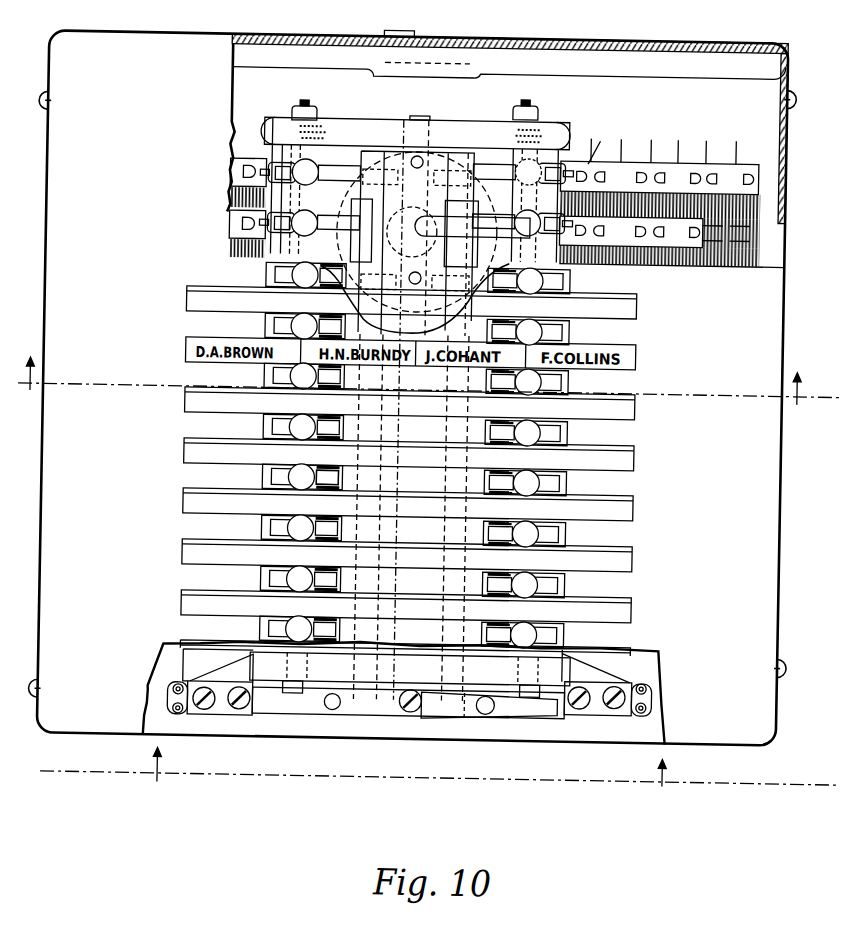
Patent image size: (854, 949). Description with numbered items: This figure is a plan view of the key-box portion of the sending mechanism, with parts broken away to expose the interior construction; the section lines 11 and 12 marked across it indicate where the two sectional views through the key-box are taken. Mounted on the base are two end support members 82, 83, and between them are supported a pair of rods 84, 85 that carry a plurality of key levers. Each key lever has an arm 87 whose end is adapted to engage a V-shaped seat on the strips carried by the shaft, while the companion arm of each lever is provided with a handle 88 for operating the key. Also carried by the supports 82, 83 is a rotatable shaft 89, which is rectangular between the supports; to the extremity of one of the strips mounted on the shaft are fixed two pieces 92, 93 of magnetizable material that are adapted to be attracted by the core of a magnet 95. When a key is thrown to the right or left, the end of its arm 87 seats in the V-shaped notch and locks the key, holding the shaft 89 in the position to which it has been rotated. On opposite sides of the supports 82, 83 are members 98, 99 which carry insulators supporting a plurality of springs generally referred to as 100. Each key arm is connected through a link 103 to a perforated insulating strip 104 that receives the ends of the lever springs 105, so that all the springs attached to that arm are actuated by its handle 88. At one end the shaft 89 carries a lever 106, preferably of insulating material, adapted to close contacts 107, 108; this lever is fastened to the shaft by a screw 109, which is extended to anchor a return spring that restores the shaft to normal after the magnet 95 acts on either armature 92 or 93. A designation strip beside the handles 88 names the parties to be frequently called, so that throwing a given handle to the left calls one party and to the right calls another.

The line 11— 11 is at (429, 368).
The line 12— 12 is at (440, 766).
The end support member 82 is at (352, 672).
The end support member 83 is at (357, 115).
The rod 84 is at (298, 106).
The rod 85 is at (532, 99).
The key lever arm 87 is at (336, 480).
The handle 88 is at (270, 480).
The rotatable shaft 89 is at (419, 117).
The magnetizable piece 92 is at (347, 245).
The magnetizable piece 93 is at (507, 263).
The magnet 95 is at (477, 214).
The spring-support member 98 is at (557, 128).
The spring-support member 99 is at (267, 122).
The springs 100 is at (714, 262).
The link 103 is at (227, 165).
The insulating strip 104 is at (227, 190).
The lever springs 105 is at (659, 167).
The lever 106 is at (455, 706).
The contact 107 is at (333, 699).
The contact 108 is at (498, 709).
The screw 109 is at (421, 713).